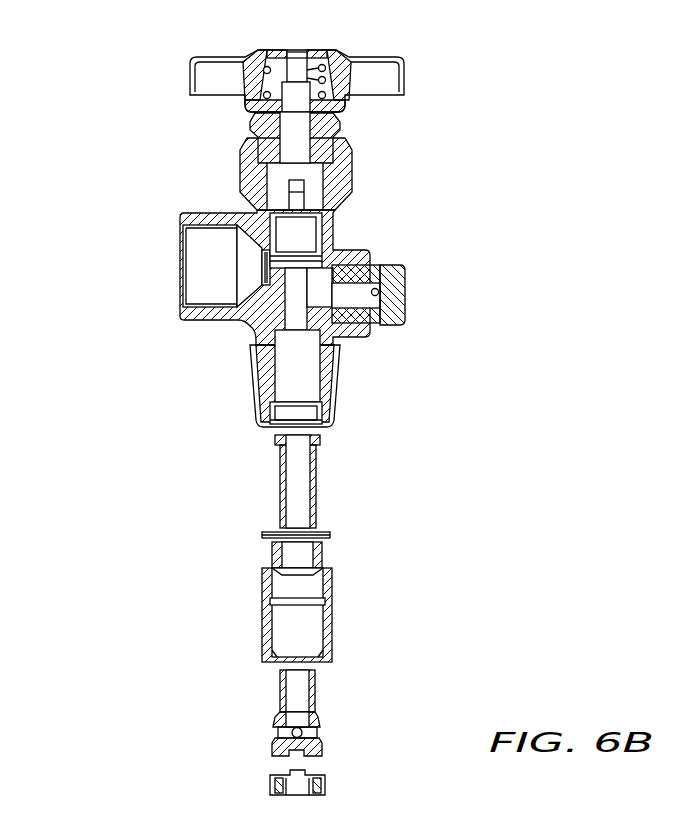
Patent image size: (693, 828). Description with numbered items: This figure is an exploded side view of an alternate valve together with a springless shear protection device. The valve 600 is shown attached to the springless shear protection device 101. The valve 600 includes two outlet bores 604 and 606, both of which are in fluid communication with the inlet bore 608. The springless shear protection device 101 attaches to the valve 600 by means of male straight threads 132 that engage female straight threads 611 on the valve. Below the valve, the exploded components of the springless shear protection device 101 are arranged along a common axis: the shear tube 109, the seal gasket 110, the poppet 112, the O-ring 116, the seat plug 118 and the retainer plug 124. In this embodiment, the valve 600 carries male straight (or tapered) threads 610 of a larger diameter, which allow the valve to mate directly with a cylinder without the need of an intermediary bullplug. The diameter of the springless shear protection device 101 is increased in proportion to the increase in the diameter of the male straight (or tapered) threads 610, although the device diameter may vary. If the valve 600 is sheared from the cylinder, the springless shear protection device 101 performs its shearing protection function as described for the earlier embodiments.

The valve 600 is at (148, 70).
The outlet bore 604 is at (180, 268).
The outlet bore 606 is at (408, 296).
The inlet bore 608 is at (292, 300).
The male straight (or tapered) threads 610 is at (250, 390).
The female straight threads 611 is at (318, 420).
The springless shear protection device 101 is at (460, 487).
The shear tube 109 is at (323, 500).
The seal gasket 110 is at (338, 533).
The male straight threads 132 is at (262, 552).
The O-ring 116 is at (290, 598).
The poppet 112 is at (347, 598).
The seat plug 118 is at (332, 704).
The retainer plug 124 is at (337, 783).